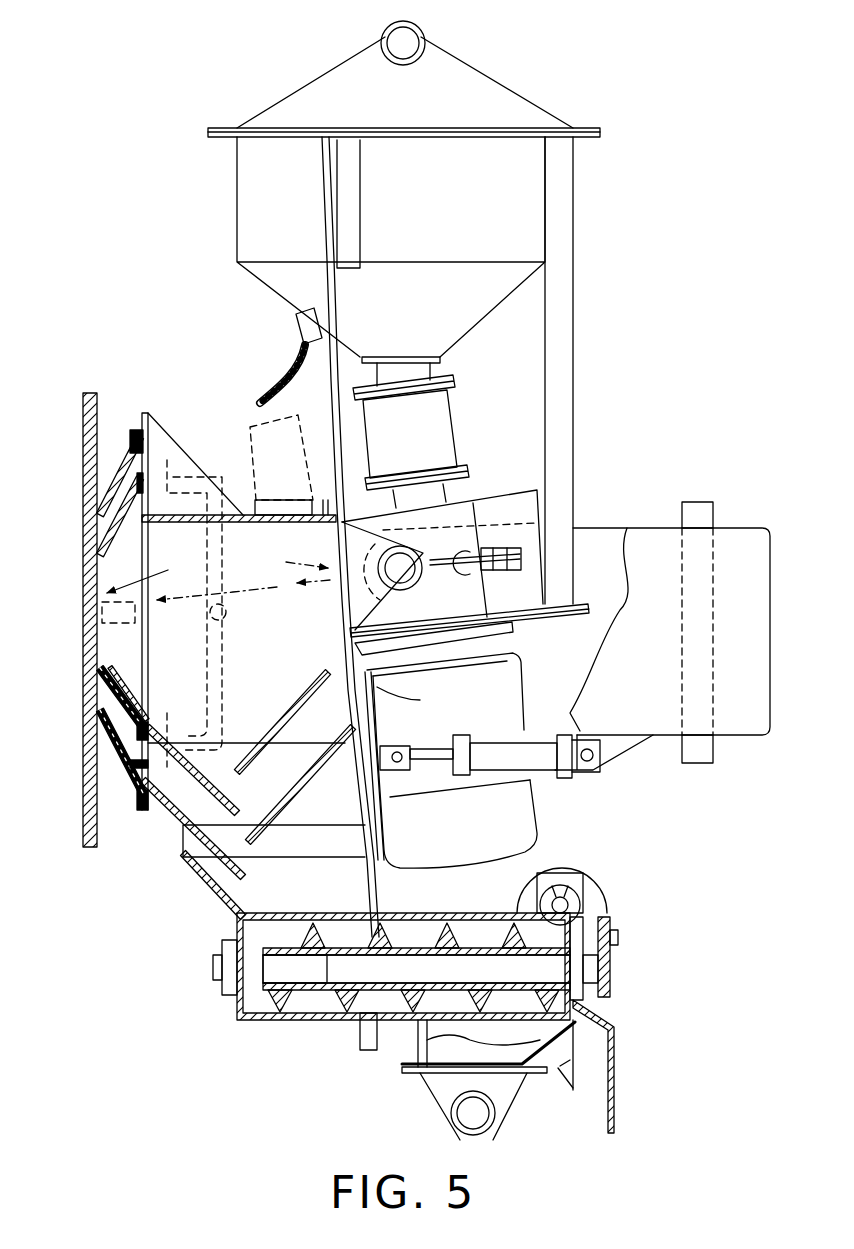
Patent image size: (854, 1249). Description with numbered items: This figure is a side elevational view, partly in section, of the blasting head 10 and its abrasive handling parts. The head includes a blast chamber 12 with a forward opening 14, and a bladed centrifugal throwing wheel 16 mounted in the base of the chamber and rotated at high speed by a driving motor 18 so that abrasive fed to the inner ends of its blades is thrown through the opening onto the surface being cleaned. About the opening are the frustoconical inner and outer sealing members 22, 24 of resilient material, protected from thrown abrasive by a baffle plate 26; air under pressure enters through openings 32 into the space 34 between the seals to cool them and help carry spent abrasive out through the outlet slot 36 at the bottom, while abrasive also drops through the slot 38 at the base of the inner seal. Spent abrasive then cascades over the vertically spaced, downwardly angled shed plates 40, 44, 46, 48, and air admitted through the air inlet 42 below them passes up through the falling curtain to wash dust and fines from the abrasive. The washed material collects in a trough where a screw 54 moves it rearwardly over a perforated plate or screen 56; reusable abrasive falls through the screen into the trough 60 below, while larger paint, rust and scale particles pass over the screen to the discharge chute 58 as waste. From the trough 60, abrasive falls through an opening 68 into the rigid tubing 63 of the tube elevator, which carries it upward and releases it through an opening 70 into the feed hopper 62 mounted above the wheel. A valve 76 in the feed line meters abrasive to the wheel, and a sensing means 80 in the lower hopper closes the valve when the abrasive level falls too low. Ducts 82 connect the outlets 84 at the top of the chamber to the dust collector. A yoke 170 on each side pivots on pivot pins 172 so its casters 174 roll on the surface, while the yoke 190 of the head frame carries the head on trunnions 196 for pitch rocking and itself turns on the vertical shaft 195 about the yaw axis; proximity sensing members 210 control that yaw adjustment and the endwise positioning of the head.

The blasting head 10 is at (127, 363).
The blast chamber 12 is at (275, 673).
The opening 14 is at (147, 571).
The bladed centrifugal throwing wheel 16 is at (243, 574).
The driving motor 18 is at (472, 838).
The inner sealing member 22 is at (100, 672).
The outer sealing member 24 is at (100, 742).
The baffle plate 26 is at (115, 675).
The openings 32 is at (143, 453).
The space 34 is at (100, 480).
The outlet slot 36 is at (147, 772).
The slot 38 is at (143, 735).
The shed plate 40 is at (220, 796).
The air inlet 42 is at (195, 848).
The shed plate 44 is at (243, 872).
The shed plate 46 is at (293, 712).
The shed plate 48 is at (308, 780).
The screw 54 is at (283, 992).
The perforated plate or screen 56 is at (532, 1015).
The discharge chute 58 is at (577, 1013).
The trough 60 is at (432, 1085).
The feed hopper 62 is at (450, 210).
The rigid tubing 63 is at (424, 32).
The opening 68 is at (500, 1093).
The opening 70 is at (418, 62).
The valve 76 is at (428, 442).
The sensing means 80 is at (300, 323).
The ducts 82 is at (248, 432).
The outlets 84 is at (277, 500).
The yoke 170 is at (224, 690).
The pivot pins 172 is at (235, 622).
The casters 174 is at (113, 462).
The yoke 190 is at (745, 528).
The shaft 195 is at (688, 502).
The pivot pins or trunnions 196 is at (410, 575).
The proximity sensing members 210 is at (113, 626).